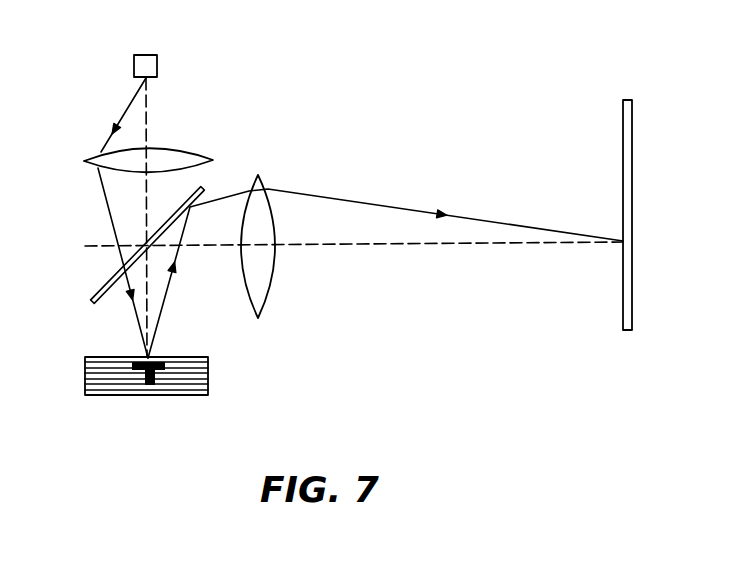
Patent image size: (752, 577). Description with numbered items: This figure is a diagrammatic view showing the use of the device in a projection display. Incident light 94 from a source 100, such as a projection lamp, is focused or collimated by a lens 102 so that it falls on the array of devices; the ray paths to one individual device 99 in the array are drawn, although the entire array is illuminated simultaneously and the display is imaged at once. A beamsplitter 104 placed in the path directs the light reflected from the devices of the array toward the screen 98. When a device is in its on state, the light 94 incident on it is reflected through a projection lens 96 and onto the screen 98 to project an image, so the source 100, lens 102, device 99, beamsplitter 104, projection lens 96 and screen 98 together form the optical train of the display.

The source 100 is at (158, 56).
The lens 102 is at (193, 147).
The light 94 is at (102, 185).
The beamsplitter 104 is at (98, 292).
The individual device 99 is at (93, 397).
The projection lens 96 is at (273, 265).
The screen 98 is at (622, 112).